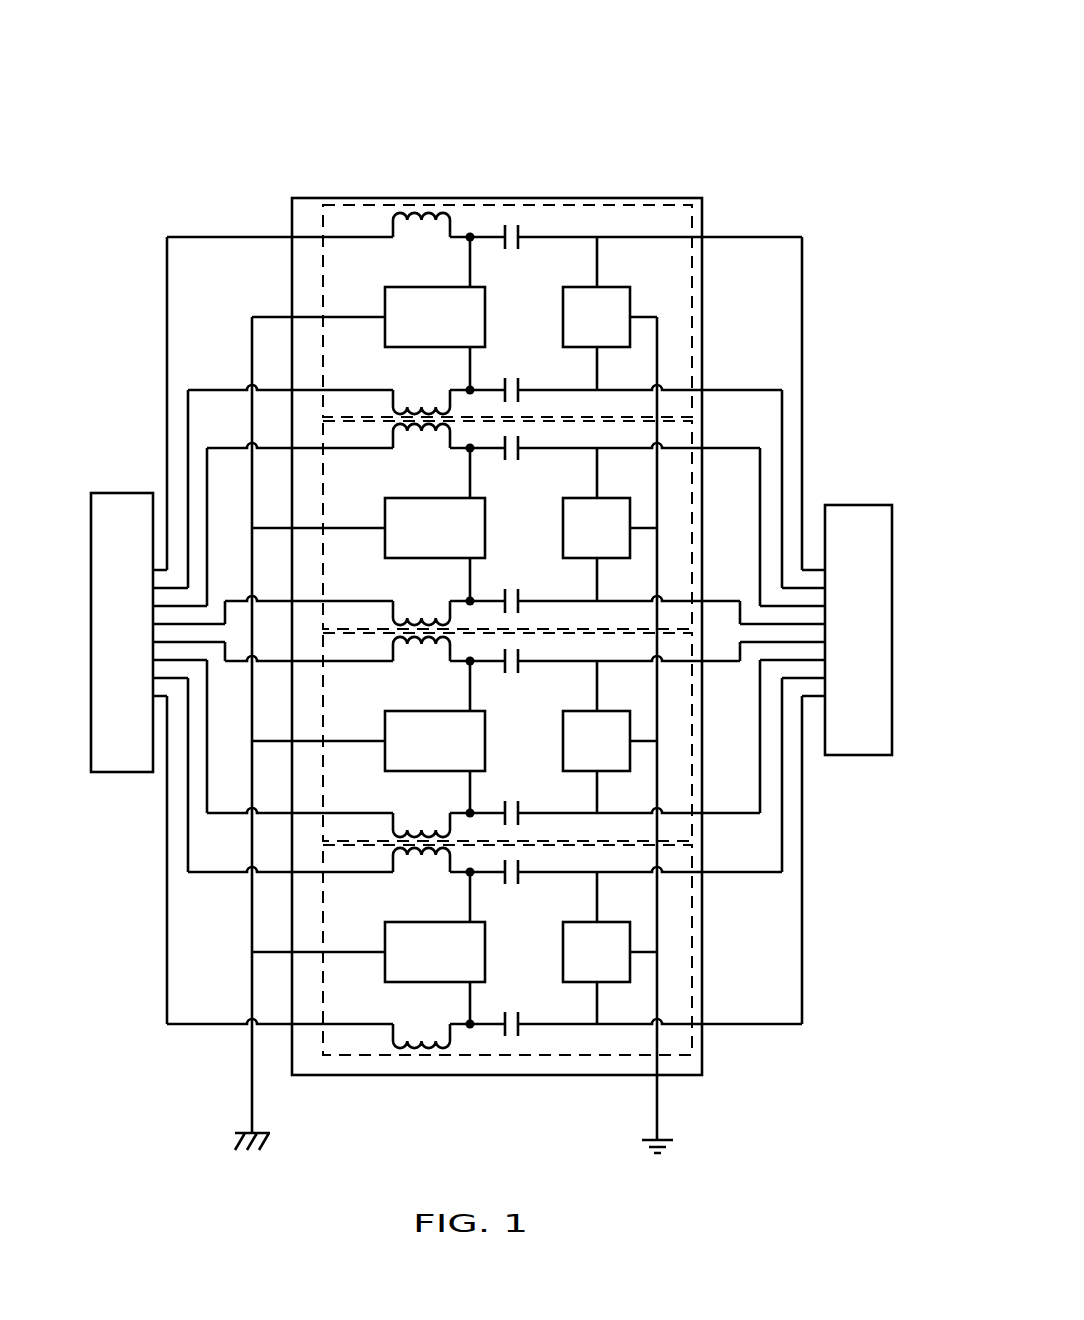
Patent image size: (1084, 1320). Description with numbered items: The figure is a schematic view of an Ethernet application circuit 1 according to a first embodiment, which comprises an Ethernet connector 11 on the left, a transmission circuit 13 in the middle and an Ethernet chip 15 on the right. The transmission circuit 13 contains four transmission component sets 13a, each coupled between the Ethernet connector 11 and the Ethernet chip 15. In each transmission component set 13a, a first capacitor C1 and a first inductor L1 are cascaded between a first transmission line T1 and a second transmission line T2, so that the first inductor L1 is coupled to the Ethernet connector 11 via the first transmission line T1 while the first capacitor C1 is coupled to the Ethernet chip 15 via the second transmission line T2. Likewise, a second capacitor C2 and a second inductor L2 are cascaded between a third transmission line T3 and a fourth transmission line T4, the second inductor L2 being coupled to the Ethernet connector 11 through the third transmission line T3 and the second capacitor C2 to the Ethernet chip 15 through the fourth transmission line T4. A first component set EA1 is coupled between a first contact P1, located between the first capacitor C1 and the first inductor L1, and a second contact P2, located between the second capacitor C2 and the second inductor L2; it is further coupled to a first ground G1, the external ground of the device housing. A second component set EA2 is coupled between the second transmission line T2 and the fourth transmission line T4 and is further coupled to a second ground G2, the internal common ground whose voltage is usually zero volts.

The Ethernet application circuit 1 is at (768, 128).
The Ethernet connector 11 is at (133, 493).
The transmission circuit 13 is at (443, 198).
The transmission component set 13a is at (693, 278).
The Ethernet chip 15 is at (848, 505).
The first transmission line T1 is at (363, 237).
The second transmission line T2 is at (635, 237).
The third transmission line T3 is at (352, 390).
The fourth transmission line T4 is at (630, 390).
The first inductor L1 is at (431, 553).
The second inductor L2 is at (431, 709).
The first capacitor C1 is at (499, 571).
The second capacitor C2 is at (499, 693).
The first contact P1 is at (473, 566).
The second contact P2 is at (473, 699).
The first component set EA1 is at (368, 634).
The second component set EA2 is at (610, 630).
The first ground G1 is at (271, 737).
The second ground G2 is at (679, 737).